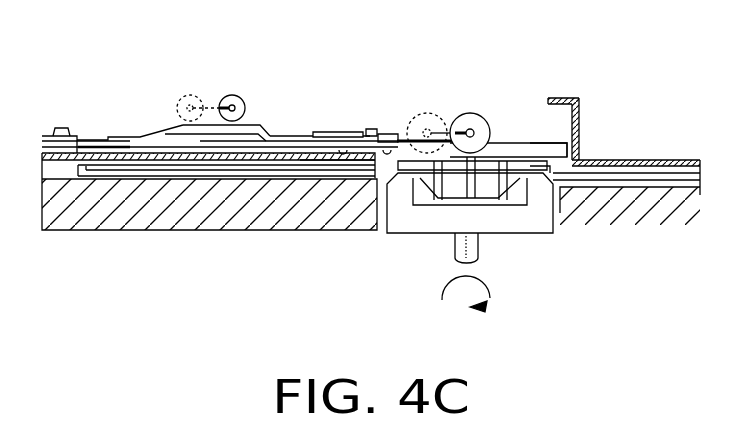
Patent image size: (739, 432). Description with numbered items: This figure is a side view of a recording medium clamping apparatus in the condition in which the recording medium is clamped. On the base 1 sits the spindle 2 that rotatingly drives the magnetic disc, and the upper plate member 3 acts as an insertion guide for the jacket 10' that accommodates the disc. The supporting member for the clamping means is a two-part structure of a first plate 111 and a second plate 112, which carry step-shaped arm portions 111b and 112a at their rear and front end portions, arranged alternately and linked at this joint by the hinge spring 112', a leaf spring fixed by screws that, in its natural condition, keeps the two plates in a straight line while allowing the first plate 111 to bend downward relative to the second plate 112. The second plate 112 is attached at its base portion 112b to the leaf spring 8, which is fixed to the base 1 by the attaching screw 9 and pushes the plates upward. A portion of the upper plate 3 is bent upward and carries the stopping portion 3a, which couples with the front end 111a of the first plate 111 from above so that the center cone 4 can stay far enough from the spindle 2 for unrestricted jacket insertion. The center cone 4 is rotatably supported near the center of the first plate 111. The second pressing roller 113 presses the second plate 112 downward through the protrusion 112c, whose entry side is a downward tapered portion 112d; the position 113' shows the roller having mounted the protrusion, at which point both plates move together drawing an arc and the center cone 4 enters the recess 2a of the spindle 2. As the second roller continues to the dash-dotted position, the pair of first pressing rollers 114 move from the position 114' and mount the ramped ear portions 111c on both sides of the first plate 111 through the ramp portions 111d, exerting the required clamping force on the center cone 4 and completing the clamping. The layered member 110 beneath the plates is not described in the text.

The base 1 is at (203, 200).
The spindle 2 is at (530, 223).
The recess 2a is at (420, 202).
The upper plate member 3 is at (637, 160).
The stopping portion 3a is at (580, 97).
The center cone 4 is at (490, 190).
The leaf spring 8 is at (90, 136).
The attaching screw 9 is at (53, 128).
The jacket 10' is at (630, 229).
The guide layers 110 is at (286, 170).
The first plate 111 is at (443, 143).
The front end 111a is at (537, 143).
The arm portion 111b is at (332, 130).
The ear portion 111c is at (515, 150).
The ramp portion 111d is at (448, 200).
The second plate 112 is at (220, 121).
The hinge spring 112' is at (337, 218).
The arm portion 112a is at (383, 134).
The base portion 112b is at (125, 137).
The protrusion 112c is at (258, 124).
The downward tapered portion 112d is at (170, 137).
The second pressing roller 113 is at (231, 84).
The second roller position 113' is at (193, 73).
The first pressing roller 114 is at (475, 106).
The first roller position 114' is at (431, 89).